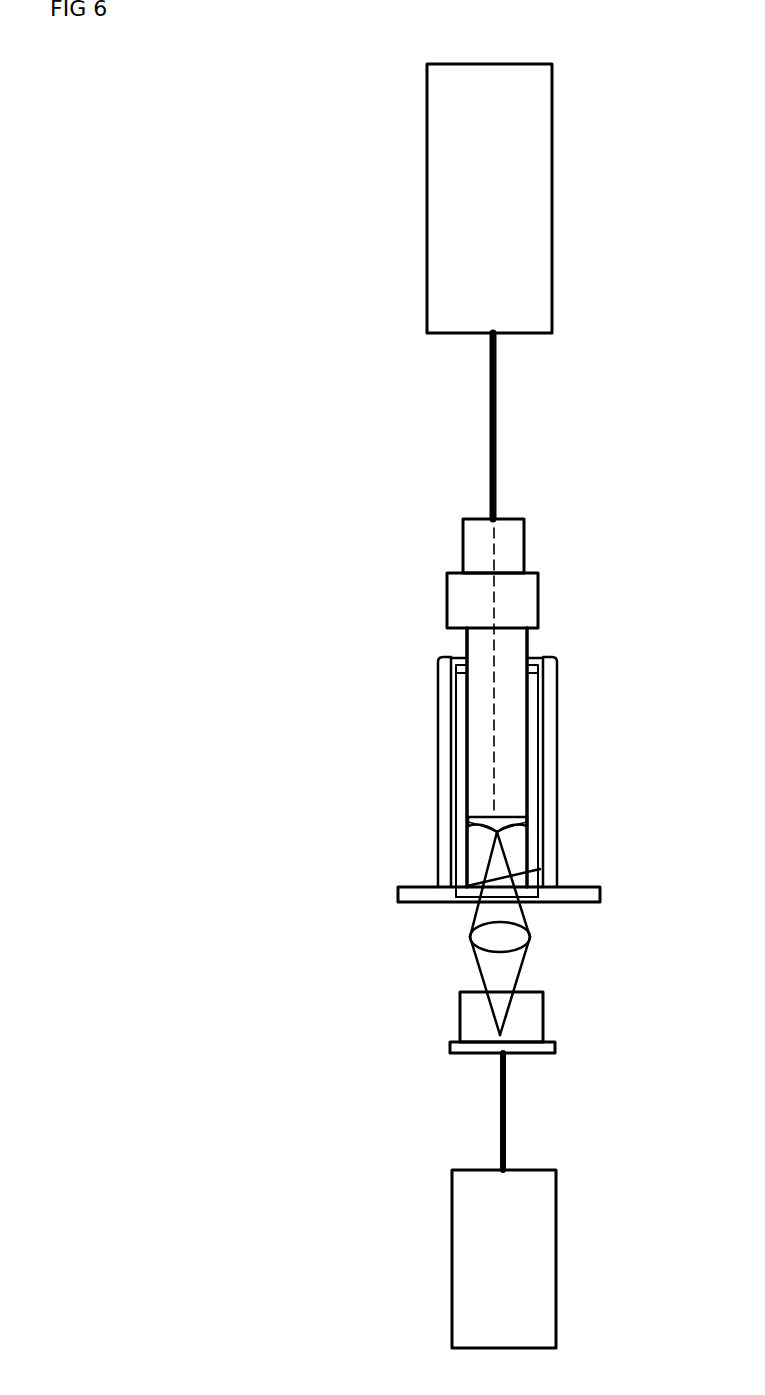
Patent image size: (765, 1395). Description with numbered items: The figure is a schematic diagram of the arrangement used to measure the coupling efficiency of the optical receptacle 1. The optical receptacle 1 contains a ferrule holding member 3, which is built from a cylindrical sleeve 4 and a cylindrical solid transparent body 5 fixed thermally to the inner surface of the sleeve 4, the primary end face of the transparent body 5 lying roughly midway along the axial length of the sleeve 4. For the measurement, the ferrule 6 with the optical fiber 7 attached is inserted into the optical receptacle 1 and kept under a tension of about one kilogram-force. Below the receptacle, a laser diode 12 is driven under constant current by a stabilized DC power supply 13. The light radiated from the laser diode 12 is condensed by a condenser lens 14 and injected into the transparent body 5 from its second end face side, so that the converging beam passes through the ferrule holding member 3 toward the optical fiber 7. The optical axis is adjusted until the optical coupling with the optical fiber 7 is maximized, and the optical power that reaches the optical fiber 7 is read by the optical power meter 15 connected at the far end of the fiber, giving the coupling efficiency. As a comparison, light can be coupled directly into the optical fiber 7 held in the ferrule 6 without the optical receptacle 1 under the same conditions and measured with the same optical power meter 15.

The optical receptacle 1 is at (438, 660).
The ferrule holding member 3 is at (538, 738).
The sleeve 4 is at (458, 750).
The transparent body 5 is at (517, 848).
The ferrule 6 is at (518, 590).
The optical fiber 7 is at (494, 700).
The laser diode 12 is at (530, 1015).
The stabilized DC power supply 13 is at (475, 1250).
The condenser lens 14 is at (490, 940).
The optical power meter 15 is at (512, 200).